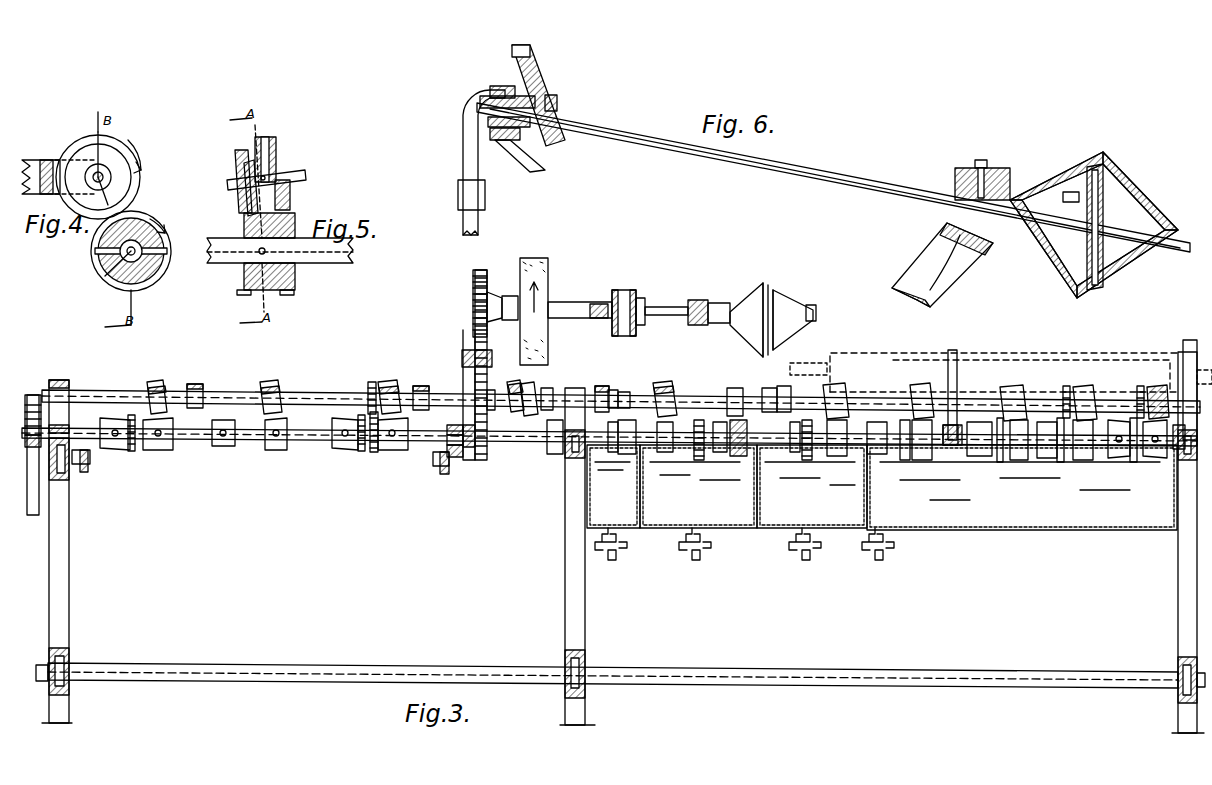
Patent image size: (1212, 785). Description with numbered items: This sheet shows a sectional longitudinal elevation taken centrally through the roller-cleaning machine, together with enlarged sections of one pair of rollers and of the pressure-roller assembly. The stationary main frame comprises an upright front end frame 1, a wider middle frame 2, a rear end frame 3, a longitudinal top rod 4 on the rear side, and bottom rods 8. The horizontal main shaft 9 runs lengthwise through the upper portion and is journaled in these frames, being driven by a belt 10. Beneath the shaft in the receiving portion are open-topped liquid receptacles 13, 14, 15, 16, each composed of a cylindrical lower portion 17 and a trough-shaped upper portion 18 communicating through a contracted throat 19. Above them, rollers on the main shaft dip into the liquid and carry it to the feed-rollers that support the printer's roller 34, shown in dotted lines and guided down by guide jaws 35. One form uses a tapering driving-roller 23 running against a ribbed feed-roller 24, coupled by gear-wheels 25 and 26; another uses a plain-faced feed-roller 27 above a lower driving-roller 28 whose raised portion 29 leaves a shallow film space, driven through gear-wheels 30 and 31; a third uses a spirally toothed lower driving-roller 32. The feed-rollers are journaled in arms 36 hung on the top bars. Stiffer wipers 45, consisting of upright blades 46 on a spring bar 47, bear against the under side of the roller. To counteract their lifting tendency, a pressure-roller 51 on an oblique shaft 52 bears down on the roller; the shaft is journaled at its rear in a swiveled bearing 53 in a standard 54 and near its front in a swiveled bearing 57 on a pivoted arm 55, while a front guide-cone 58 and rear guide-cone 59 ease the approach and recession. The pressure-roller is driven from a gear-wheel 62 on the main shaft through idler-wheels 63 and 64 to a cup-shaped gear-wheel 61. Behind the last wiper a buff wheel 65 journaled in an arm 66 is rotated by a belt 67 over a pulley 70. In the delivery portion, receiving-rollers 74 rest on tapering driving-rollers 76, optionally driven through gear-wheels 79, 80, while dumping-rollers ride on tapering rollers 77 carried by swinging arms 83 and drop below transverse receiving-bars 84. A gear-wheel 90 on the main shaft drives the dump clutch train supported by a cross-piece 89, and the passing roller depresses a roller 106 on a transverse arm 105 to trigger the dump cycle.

In FIG. 3, the front end frame 1 is at (1188, 542).
In FIG. 3, the middle frame 2 is at (577, 556).
In FIG. 3, the rear end frame 3 is at (57, 551).
In FIG. 3, the longitudinal top rod 4 is at (92, 396).
In FIG. 3, the bottom rods 8 is at (620, 670).
In FIG. 4, the main shaft 9 is at (110, 275).
In FIG. 5, the main shaft 9 is at (287, 250).
In FIG. 3, the main shaft 9 is at (312, 443).
In FIG. 3, the belt 10 is at (33, 515).
In FIG. 3, the liquid receptacle 13 is at (1022, 487).
In FIG. 3, the liquid receptacle 14 is at (812, 486).
In FIG. 3, the liquid receptacle 15 is at (698, 486).
In FIG. 3, the liquid receptacle 16 is at (613, 486).
In FIG. 3, the lower portion 17 is at (905, 545).
In FIG. 3, the trough-shaped upper portion 18 is at (776, 453).
In FIG. 3, the contracted throat 19 is at (710, 468).
In FIG. 3, the tapering driving-roller 23 is at (1118, 460).
In FIG. 3, the ribbed feed-roller 24 is at (1157, 392).
In FIG. 3, the gear-wheel 25 is at (1140, 462).
In FIG. 3, the gear-wheel 26 is at (1138, 390).
In FIG. 4, the plain-faced feed-roller 27 is at (110, 142).
In FIG. 5, the plain-faced feed-roller 27 is at (278, 138).
In FIG. 3, the plain-faced feed-roller 27 is at (960, 393).
In FIG. 4, the lower driving-roller 28 is at (167, 228).
In FIG. 5, the lower driving-roller 28 is at (300, 276).
In FIG. 3, the lower driving-roller 28 is at (1022, 460).
In FIG. 4, the raised portion 29 is at (158, 278).
In FIG. 3, the raised portion 29 is at (922, 460).
In FIG. 5, the gear-wheel 30 is at (240, 296).
In FIG. 3, the gear-wheel 30 is at (1065, 462).
In FIG. 5, the gear-wheel 31 is at (244, 163).
In FIG. 3, the gear-wheel 31 is at (1065, 388).
In FIG. 3, the lower driving-roller 32 is at (699, 460).
In FIG. 3, the printer's roller 34 is at (1045, 352).
In FIG. 3, the guide jaws 35 is at (1070, 385).
In FIG. 4, the arms 36 is at (58, 187).
In FIG. 5, the arms 36 is at (298, 171).
In FIG. 3, the arms 36 is at (672, 390).
In FIG. 3, the wipers 45 is at (614, 390).
In FIG. 3, the upright blades 46 is at (696, 389).
In FIG. 3, the spring bar 47 is at (738, 380).
In FIG. 6, the pressure-roller 51 is at (1103, 152).
In FIG. 3, the pressure-roller 51 is at (765, 285).
In FIG. 6, the oblique shaft 52 is at (858, 178).
In FIG. 3, the oblique shaft 52 is at (666, 303).
In FIG. 6, the swiveled bearing 53 is at (488, 95).
In FIG. 6, the standard 54 is at (463, 164).
In FIG. 3, the standard 54 is at (463, 340).
In FIG. 6, the arm 55 is at (942, 265).
In FIG. 3, the arm 55 is at (698, 302).
In FIG. 6, the swiveled bearing 57 is at (955, 190).
In FIG. 6, the front guide-cone 58 is at (1158, 200).
In FIG. 3, the front guide-cone 58 is at (806, 305).
In FIG. 6, the rear guide-cone 59 is at (1070, 172).
In FIG. 3, the rear guide-cone 59 is at (752, 292).
In FIG. 6, the cup-shaped gear-wheel 61 is at (533, 53).
In FIG. 3, the cup-shaped gear-wheel 61 is at (488, 278).
In FIG. 3, the gear-wheel 62 is at (487, 450).
In FIG. 3, the idler-wheel 63 is at (488, 392).
In FIG. 3, the idler-wheel 64 is at (480, 336).
In FIG. 3, the buff or brush wheel 65 is at (534, 304).
In FIG. 3, the arm 66 is at (598, 304).
In FIG. 3, the belt 67 is at (622, 336).
In FIG. 3, the pulley 70 is at (634, 292).
In FIG. 3, the receiving-rollers 74 is at (274, 388).
In FIG. 3, the tapering driving-rollers 76 is at (275, 445).
In FIG. 3, the tapering driving-rollers 77 is at (118, 450).
In FIG. 3, the gear-wheel 79 is at (370, 452).
In FIG. 3, the gear-wheel 80 is at (368, 388).
In FIG. 3, the arms 83 is at (85, 472).
In FIG. 3, the transverse receiving-bars 84 is at (309, 386).
In FIG. 3, the cross-piece 89 is at (455, 460).
In FIG. 3, the gear-wheel 90 is at (468, 448).
In FIG. 3, the transverse arm 105 is at (505, 414).
In FIG. 3, the roller 106 is at (520, 384).